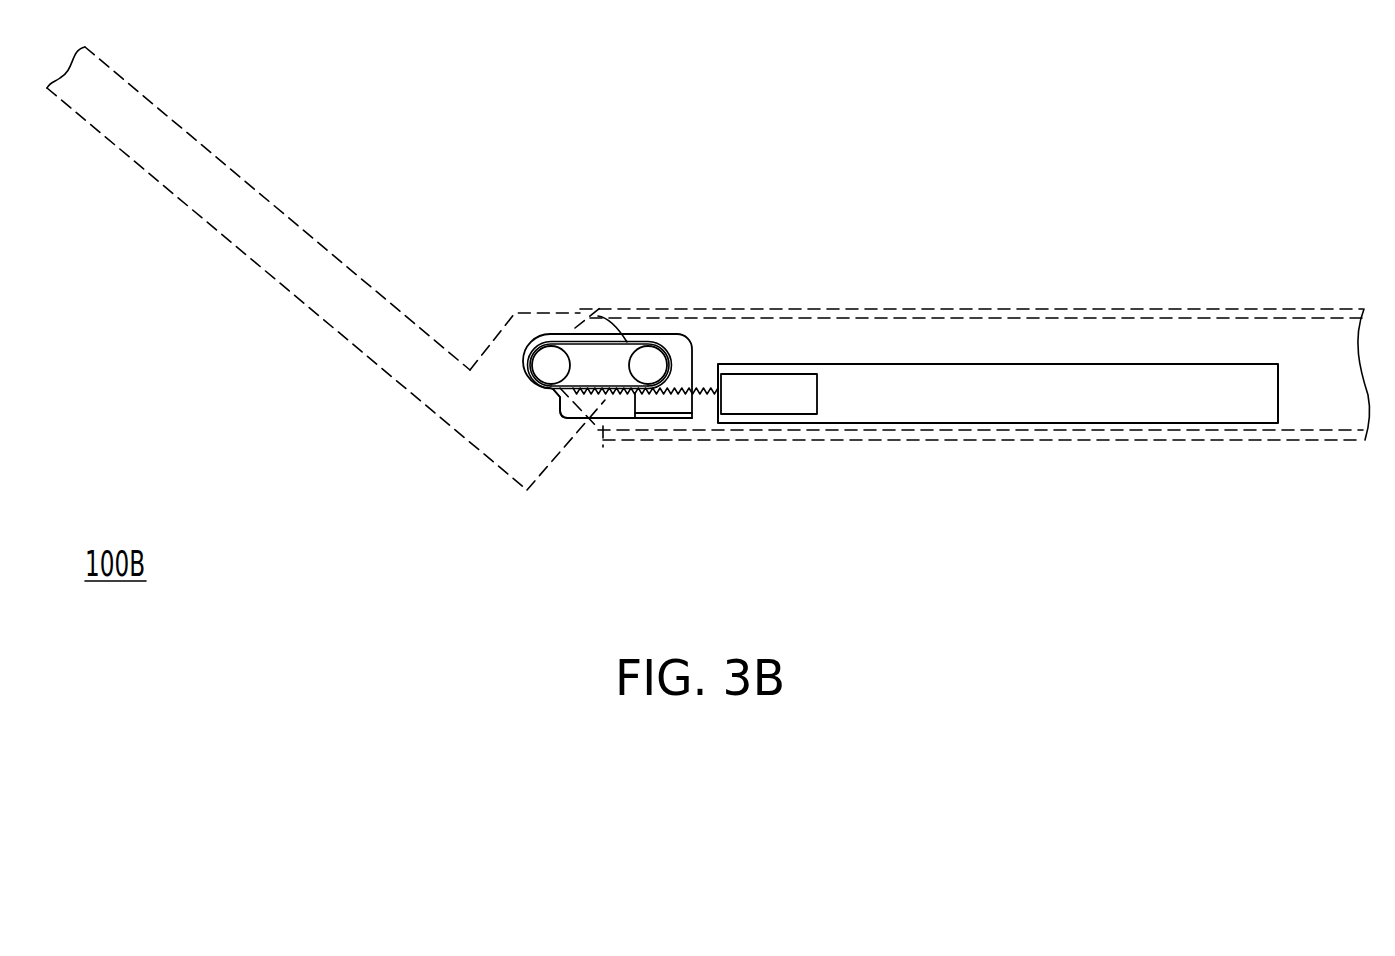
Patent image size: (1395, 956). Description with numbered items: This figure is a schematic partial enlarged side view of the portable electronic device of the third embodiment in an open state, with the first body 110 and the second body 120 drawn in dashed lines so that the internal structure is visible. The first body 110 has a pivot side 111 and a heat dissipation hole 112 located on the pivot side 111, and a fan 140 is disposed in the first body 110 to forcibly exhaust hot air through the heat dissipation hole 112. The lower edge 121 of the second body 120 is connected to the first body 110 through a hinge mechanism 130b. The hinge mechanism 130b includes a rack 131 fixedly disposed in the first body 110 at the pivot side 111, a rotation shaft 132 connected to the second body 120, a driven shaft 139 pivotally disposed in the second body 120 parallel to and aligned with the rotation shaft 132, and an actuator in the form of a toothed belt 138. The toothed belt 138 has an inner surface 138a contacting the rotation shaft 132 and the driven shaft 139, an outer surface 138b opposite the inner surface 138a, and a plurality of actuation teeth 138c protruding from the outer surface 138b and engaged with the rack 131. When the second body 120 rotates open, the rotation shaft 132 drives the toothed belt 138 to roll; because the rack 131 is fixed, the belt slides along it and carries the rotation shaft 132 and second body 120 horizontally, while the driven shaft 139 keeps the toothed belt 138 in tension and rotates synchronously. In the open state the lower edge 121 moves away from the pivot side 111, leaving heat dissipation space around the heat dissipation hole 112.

The first body 110 is at (1327, 338).
The pivot side 111 is at (607, 443).
The heat dissipation hole 112 is at (583, 340).
The second body 120 is at (193, 192).
The lower edge 121 is at (532, 460).
The hinge mechanism 130b is at (697, 335).
The rack 131 is at (667, 405).
The rotation shaft 132 is at (548, 366).
The toothed belt 138 is at (637, 347).
The inner surface 138a is at (597, 386).
The outer surface 138b is at (553, 394).
The actuation teeth 138c is at (625, 398).
The driven shaft 139 is at (650, 372).
The fan 140 is at (1030, 402).